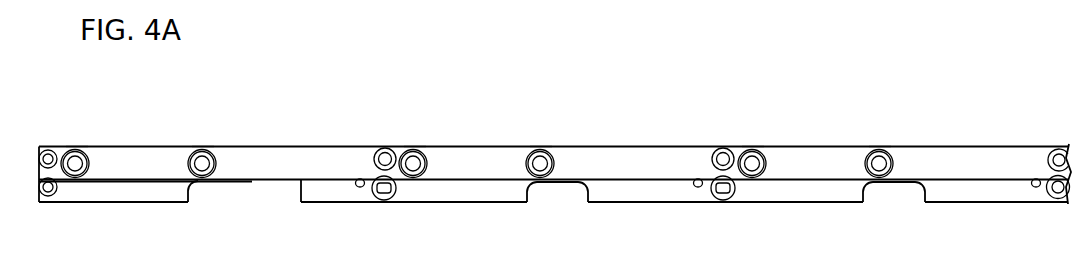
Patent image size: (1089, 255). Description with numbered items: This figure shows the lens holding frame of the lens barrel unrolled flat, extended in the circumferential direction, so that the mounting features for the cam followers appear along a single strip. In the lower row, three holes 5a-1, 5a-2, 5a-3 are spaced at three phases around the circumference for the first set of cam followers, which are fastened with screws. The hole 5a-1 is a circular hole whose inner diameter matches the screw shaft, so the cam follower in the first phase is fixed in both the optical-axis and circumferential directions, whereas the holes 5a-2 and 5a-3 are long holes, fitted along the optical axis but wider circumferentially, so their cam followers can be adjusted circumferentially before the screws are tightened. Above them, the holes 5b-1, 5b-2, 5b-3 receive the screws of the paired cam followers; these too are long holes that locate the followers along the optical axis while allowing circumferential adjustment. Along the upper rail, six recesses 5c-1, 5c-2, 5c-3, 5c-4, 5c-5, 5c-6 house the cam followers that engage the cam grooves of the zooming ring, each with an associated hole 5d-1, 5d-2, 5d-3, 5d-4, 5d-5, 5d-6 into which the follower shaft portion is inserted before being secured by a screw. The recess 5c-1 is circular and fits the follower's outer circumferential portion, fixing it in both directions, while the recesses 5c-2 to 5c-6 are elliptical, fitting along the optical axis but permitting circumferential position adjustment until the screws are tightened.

The hole 5a-1 is at (57, 195).
The hole 5a-2 is at (394, 197).
The hole 5a-3 is at (732, 197).
The hole 5b-1 is at (48, 149).
The hole 5b-2 is at (386, 148).
The hole 5b-3 is at (724, 148).
The recess 5c-1 is at (549, 156).
The recess 5c-2 is at (761, 156).
The recess 5c-3 is at (925, 132).
The recess 5c-4 is at (84, 156).
The recess 5c-5 is at (211, 156).
The recess 5c-6 is at (422, 156).
The hole 5d-1 is at (541, 148).
The hole 5d-2 is at (753, 148).
The hole 5d-3 is at (880, 148).
The hole 5d-4 is at (77, 147).
The hole 5d-5 is at (203, 147).
The hole 5d-6 is at (416, 148).